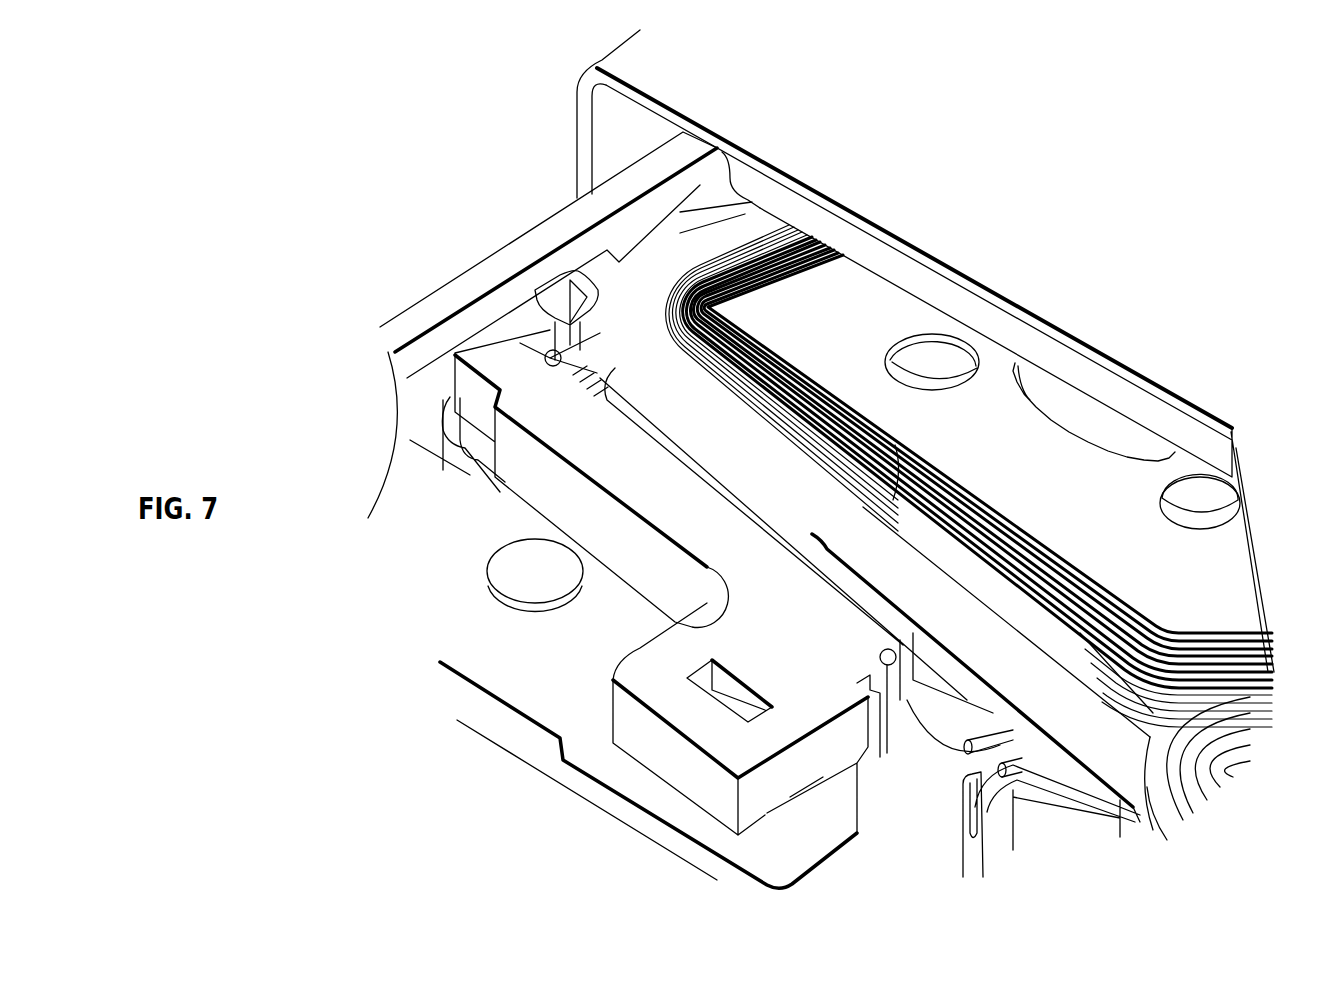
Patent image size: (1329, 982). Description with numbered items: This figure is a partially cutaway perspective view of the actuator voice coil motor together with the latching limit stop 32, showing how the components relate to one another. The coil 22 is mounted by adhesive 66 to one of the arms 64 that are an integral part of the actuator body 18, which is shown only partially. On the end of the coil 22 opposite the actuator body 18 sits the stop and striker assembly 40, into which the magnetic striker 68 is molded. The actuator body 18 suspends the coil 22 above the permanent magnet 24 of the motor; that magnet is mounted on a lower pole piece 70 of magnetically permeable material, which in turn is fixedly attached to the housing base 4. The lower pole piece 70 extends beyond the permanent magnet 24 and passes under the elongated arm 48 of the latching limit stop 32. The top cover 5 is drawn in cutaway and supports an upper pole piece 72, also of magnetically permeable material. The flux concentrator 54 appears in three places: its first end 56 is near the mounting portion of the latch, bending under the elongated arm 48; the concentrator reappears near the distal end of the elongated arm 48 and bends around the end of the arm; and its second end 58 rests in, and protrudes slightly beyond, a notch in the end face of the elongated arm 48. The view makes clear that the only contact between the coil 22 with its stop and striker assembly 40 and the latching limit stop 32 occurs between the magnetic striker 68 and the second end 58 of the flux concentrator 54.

The housing base 4 is at (405, 315).
The top cover 5 is at (575, 108).
The actuator body 18 is at (1147, 787).
The coil 22 is at (808, 383).
The permanent magnet 24 is at (683, 443).
The latching limit stop 32 is at (667, 762).
The stop and striker assembly 40 is at (749, 223).
The elongated arm 48 is at (555, 502).
The flux concentrator 54 is at (460, 437).
The first end 56 is at (880, 652).
The second end 58 is at (551, 366).
The arm 64 is at (1105, 750).
The adhesive 66 is at (1037, 595).
The magnetic striker 68 is at (557, 283).
The lower pole piece 70 is at (593, 390).
The upper pole piece 72 is at (867, 245).